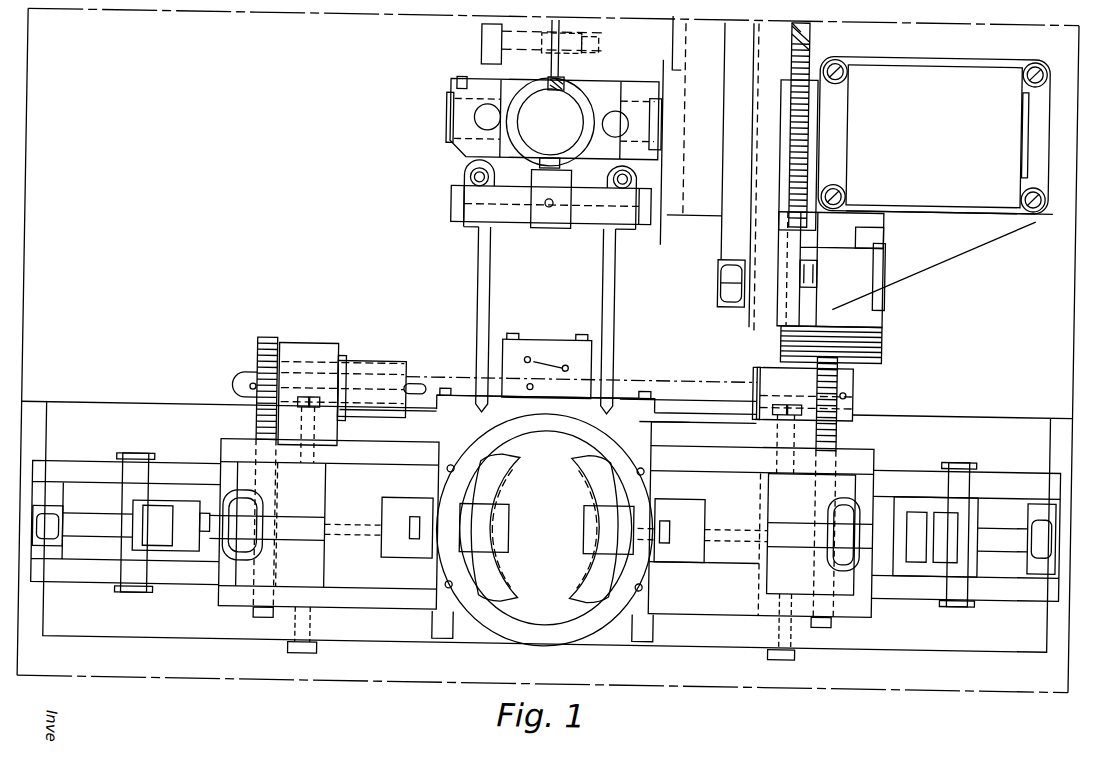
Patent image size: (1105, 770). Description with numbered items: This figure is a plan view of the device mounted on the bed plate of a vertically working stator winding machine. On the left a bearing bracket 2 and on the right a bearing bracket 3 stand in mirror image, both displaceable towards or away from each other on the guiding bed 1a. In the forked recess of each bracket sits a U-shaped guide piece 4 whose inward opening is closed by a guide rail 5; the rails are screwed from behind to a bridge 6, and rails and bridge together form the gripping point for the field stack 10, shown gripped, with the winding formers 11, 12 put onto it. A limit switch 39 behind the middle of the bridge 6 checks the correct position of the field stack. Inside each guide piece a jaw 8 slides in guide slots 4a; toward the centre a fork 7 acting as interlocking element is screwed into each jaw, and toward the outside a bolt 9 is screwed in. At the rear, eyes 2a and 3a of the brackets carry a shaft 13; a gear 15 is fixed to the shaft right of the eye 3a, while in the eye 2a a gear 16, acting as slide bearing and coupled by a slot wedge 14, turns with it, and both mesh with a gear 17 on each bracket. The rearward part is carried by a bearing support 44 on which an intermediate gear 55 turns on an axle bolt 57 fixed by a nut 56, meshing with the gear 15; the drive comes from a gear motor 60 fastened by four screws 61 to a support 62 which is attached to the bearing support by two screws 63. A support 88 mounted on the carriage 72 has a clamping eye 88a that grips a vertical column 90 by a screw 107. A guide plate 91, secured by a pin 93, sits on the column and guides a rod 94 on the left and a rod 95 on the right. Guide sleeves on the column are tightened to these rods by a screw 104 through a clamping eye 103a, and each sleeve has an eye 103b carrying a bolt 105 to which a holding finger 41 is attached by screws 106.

The guiding bed 1a is at (1063, 639).
The bearing bracket 2 is at (286, 635).
The eye 2a is at (306, 354).
The bearing bracket 3 is at (807, 638).
The eye 3a is at (763, 364).
The U-shaped guide piece 4 is at (363, 450).
The guide slots 4a is at (413, 399).
The guide rail 5 is at (444, 635).
The bridge 6 is at (460, 402).
The fork 7 is at (415, 551).
The jaw 8 is at (365, 580).
The bolt 9 is at (275, 532).
The field stack 10 is at (548, 637).
The winding former 11 is at (497, 593).
The winding former 12 is at (585, 593).
The shaft 13 is at (713, 382).
The slot wedge 14 is at (253, 390).
The gear 15 is at (833, 405).
The gear 16 is at (264, 343).
The gear 17 is at (842, 447).
The limit switch 39 is at (547, 347).
The holding finger 41 is at (490, 284).
The bearing support 44 is at (752, 307).
The intermediate gear 55 is at (882, 328).
The nut 56 is at (725, 277).
The axle bolt 57 is at (881, 298).
The gear motor 60 is at (920, 196).
The screws 61 is at (1035, 209).
The support 62 is at (980, 223).
The screws 63 is at (815, 273).
The carriage 72 is at (694, 212).
The support 88 is at (666, 140).
The clamping eye 88a is at (502, 73).
The vertical column 90 is at (524, 128).
The guide plate 91 is at (593, 159).
The pin 93 is at (563, 167).
The rod 94 is at (478, 118).
The rod 95 is at (604, 124).
The clamping eye 103a is at (448, 132).
The eye 103b is at (547, 228).
The screw 104 is at (447, 90).
The bolt 105 is at (538, 165).
The screws 106 is at (469, 179).
The screw 107 is at (481, 45).